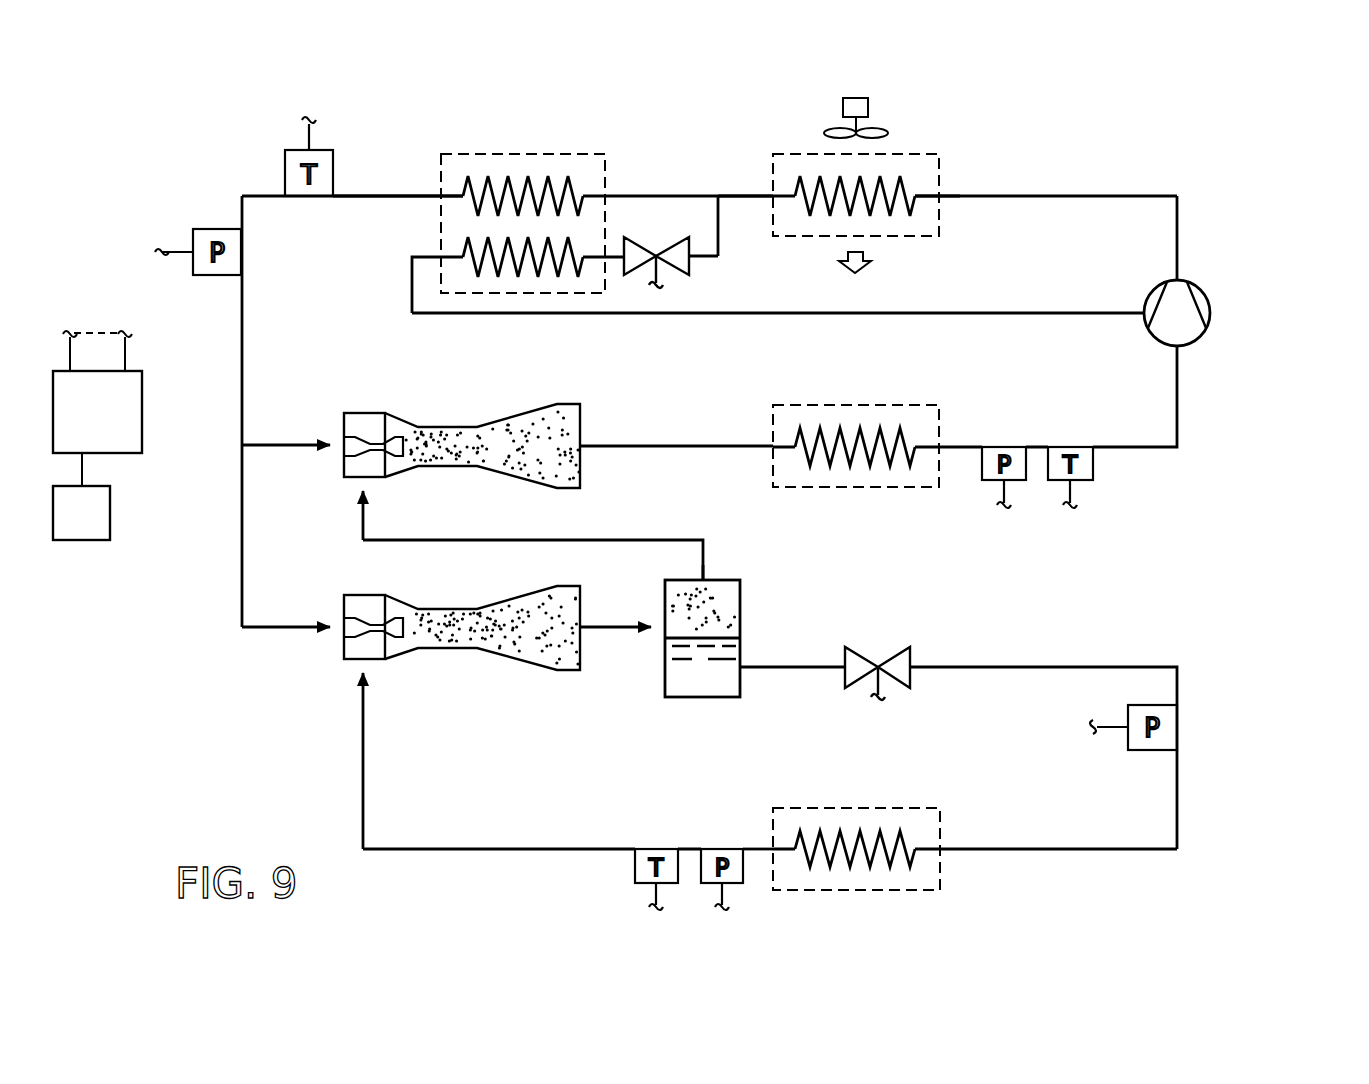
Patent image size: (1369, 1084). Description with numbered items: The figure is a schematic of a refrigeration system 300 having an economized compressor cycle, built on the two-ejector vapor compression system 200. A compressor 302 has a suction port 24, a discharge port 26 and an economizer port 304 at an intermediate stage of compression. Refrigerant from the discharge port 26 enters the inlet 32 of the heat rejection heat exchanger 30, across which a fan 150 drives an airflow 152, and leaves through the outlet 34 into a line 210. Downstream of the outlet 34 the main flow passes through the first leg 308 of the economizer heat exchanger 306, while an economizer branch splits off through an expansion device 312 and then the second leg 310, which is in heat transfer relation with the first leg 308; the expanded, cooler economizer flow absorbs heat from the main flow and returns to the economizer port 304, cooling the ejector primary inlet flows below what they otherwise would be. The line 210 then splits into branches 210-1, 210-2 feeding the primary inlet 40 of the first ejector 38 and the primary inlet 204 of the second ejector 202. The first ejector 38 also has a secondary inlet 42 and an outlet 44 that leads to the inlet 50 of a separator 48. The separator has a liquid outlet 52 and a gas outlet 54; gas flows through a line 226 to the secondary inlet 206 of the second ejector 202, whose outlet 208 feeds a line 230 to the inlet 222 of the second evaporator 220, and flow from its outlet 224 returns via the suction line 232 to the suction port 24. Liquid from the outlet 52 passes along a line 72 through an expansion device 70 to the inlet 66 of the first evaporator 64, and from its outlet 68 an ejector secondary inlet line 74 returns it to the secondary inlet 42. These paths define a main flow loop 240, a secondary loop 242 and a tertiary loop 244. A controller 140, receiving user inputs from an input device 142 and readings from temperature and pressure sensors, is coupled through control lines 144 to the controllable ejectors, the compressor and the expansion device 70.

The inlet (suction port) 24 is at (1190, 348).
The outlet (discharge port) 26 is at (1180, 280).
The heat rejection heat exchanger 30 is at (960, 128).
The inlet 32 is at (940, 180).
The outlet 34 is at (773, 196).
The ejector 38 is at (470, 664).
The primary inlet 40 is at (340, 668).
The secondary inlet 42 is at (365, 660).
The outlet 44 is at (588, 624).
The separator 48 is at (762, 613).
The inlet 50 is at (665, 640).
The liquid outlet 52 is at (742, 667).
The gas outlet 54 is at (703, 565).
The heat exchanger (evaporator) 64 is at (964, 880).
The inlet 66 is at (940, 847).
The outlet 68 is at (773, 847).
The expansion device 70 is at (882, 638).
The line 72 is at (1177, 780).
The ejector secondary inlet line 74 is at (545, 851).
The controller 140 is at (76, 421).
The input device 142 is at (61, 528).
The control lines 144 is at (125, 353).
The fan 150 is at (813, 118).
The airflow 152 is at (862, 263).
The ejector cycle vapor compression system 200 is at (1164, 152).
The second ejector 202 is at (447, 407).
The primary inlet 204 is at (340, 436).
The secondary inlet 206 is at (357, 479).
The outlet 208 is at (598, 440).
The line 210 is at (350, 198).
The branch 210-1 is at (242, 615).
The branch 210-2 is at (272, 445).
The second evaporator 220 is at (880, 388).
The inlet 222 is at (773, 446).
The outlet 224 is at (940, 446).
The line 226 is at (625, 538).
The line 230 is at (622, 446).
The suction line 232 is at (1130, 455).
The main flow loop 240 is at (276, 328).
The secondary loop 242 is at (281, 594).
The tertiary loop 244 is at (556, 806).
The system 300 is at (1267, 256).
The compressor 302 is at (1229, 305).
The economizer port 304 is at (1145, 330).
The economizer heat exchanger 306 is at (410, 140).
The first leg 308 is at (482, 178).
The second leg 310 is at (500, 270).
The expansion device 312 is at (682, 294).